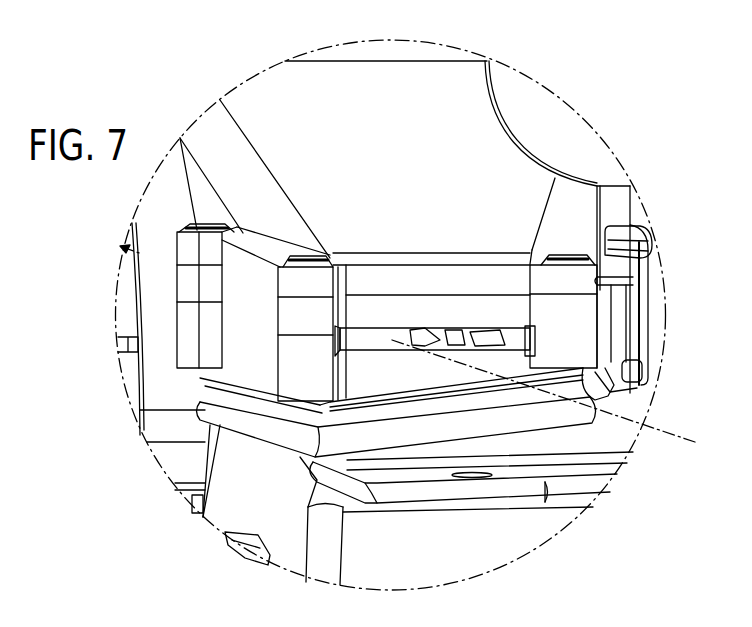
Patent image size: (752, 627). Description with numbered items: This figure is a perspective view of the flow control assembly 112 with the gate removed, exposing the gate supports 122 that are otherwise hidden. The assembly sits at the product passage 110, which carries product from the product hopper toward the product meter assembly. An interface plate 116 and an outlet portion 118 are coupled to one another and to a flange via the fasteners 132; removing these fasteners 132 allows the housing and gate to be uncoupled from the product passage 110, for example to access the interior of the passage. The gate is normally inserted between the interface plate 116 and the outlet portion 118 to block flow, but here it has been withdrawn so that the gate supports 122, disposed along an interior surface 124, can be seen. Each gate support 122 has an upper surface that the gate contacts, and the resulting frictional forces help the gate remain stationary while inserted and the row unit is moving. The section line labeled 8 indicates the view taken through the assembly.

The section line 8- 8 is at (172, 269).
The product passage 110 is at (415, 191).
The flow control assembly 112 is at (677, 263).
The interface plate 116 is at (447, 321).
The outlet portion 118 is at (387, 388).
The gate supports 122 is at (500, 340).
The interior surface 124 is at (497, 330).
The fasteners 132 is at (192, 227).